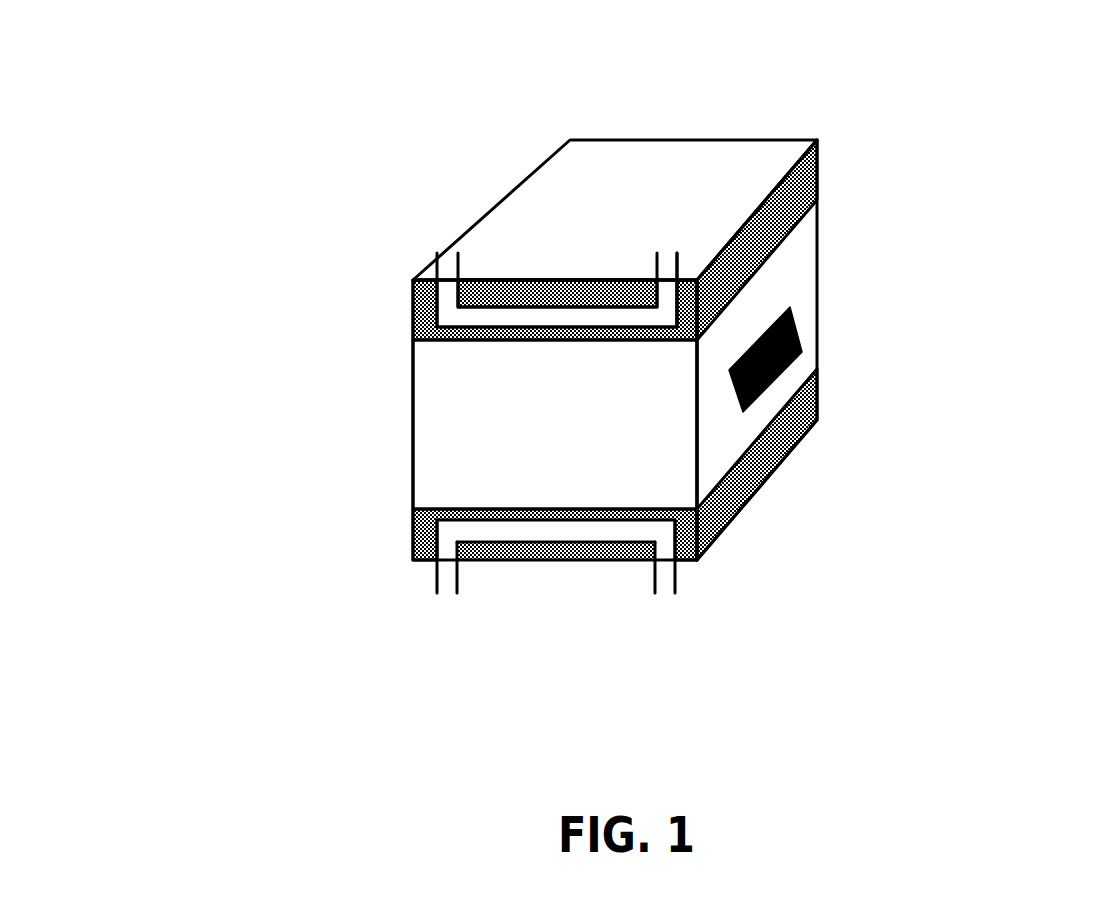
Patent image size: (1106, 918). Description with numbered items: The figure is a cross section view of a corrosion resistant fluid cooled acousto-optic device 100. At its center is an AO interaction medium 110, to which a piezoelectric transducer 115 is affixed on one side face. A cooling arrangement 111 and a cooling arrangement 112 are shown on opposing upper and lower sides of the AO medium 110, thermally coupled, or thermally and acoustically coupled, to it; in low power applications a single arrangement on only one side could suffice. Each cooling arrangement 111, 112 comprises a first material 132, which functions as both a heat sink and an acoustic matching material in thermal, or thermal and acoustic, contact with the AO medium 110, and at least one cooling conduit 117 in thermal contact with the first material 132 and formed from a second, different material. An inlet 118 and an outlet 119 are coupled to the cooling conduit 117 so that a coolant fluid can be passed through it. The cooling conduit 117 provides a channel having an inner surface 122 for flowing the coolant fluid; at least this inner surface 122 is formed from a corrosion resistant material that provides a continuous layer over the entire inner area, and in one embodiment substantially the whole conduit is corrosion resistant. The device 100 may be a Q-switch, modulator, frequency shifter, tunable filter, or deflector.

The corrosion resistant fluid cooled acousto-optic device 100 is at (870, 601).
The AO interaction medium 110 is at (413, 388).
The cooling arrangement 111 is at (372, 295).
The cooling arrangement 112 is at (372, 527).
The piezoelectric transducer 115 is at (793, 330).
The cooling conduit 117 is at (555, 318).
The inlet 118 is at (450, 265).
The outlet 119 is at (666, 265).
The inner surface 122 is at (598, 327).
The first material 132 is at (817, 180).